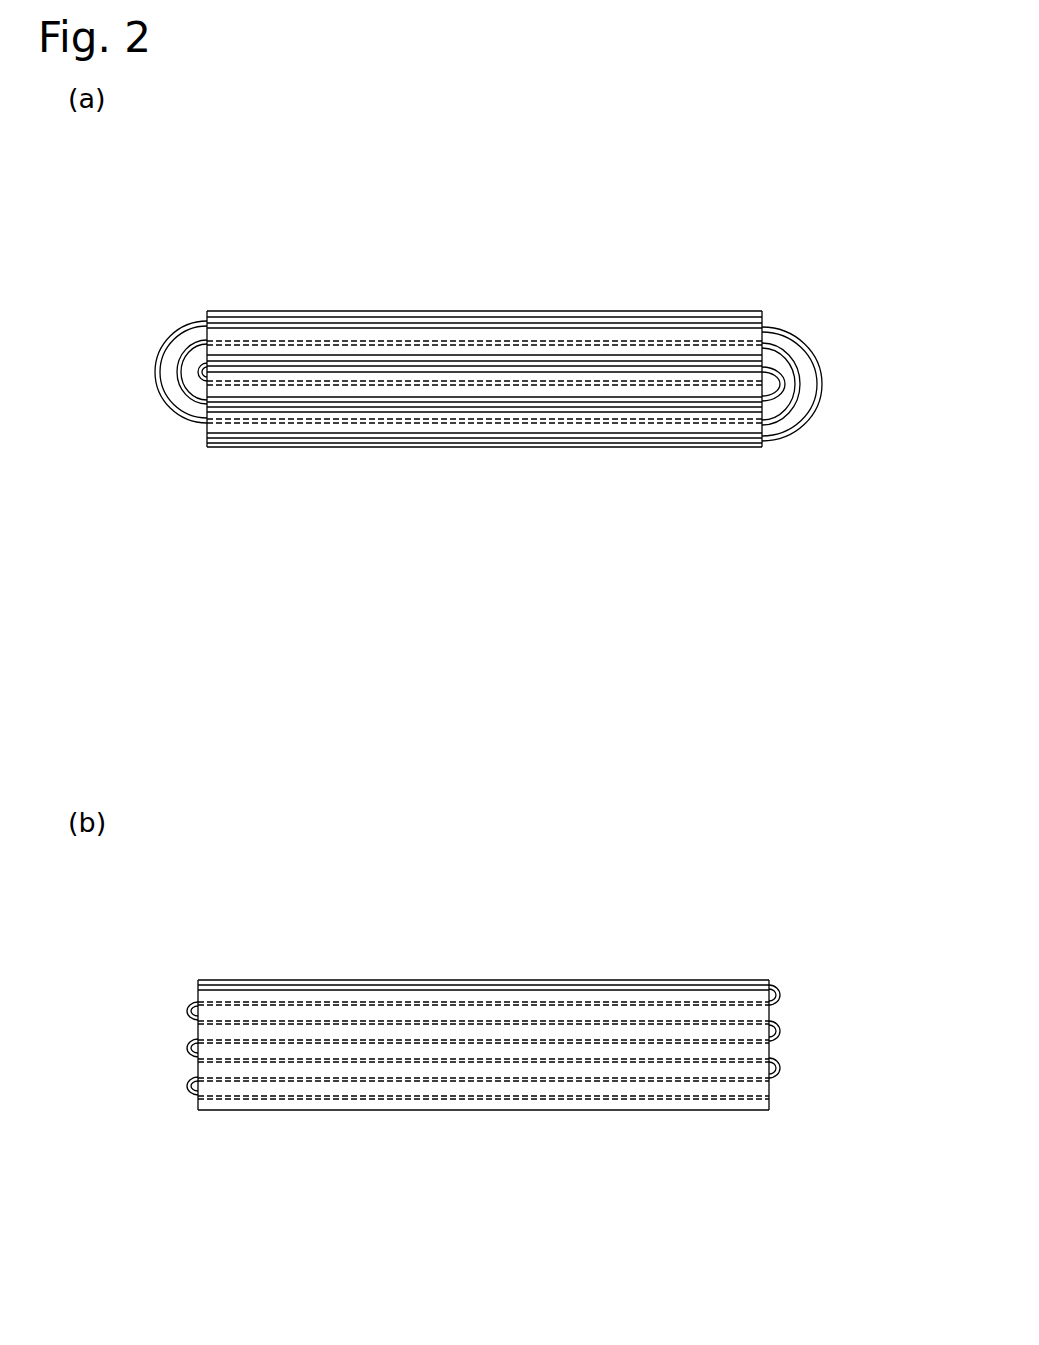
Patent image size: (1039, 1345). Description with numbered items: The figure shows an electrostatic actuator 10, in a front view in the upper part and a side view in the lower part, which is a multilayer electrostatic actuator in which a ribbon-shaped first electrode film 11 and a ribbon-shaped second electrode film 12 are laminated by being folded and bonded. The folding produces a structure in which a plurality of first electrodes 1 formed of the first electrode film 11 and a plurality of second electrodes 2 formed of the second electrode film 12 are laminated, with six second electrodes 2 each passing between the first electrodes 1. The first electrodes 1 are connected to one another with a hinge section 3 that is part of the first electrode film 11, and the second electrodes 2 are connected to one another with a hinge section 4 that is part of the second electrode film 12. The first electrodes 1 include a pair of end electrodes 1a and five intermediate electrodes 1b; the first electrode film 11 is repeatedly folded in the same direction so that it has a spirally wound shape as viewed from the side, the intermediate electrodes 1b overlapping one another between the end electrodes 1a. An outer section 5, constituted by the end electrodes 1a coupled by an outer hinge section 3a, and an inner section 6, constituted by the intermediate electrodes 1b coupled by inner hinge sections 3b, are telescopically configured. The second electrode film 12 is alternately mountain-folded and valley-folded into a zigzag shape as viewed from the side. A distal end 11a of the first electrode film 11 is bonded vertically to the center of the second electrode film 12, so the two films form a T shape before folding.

The first electrode 1 is at (587, 213).
The end electrode 1a is at (555, 318).
The intermediate electrode 1b is at (637, 385).
The second electrode 2 is at (441, 347).
The hinge section 3 is at (90, 327).
The outer hinge section 3a is at (165, 332).
The inner hinge section 3b is at (176, 357).
The hinge section 4 is at (362, 420).
The outer section 5 is at (812, 326).
The inner section 6 is at (768, 322).
The electrostatic actuator 10 is at (821, 266).
The first electrode film 11 is at (802, 319).
The distal end 11a is at (230, 394).
The second electrode film 12 is at (670, 428).